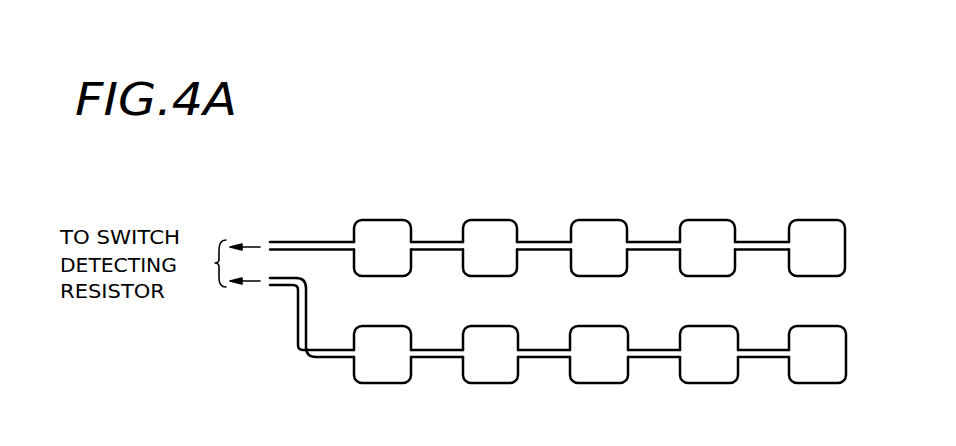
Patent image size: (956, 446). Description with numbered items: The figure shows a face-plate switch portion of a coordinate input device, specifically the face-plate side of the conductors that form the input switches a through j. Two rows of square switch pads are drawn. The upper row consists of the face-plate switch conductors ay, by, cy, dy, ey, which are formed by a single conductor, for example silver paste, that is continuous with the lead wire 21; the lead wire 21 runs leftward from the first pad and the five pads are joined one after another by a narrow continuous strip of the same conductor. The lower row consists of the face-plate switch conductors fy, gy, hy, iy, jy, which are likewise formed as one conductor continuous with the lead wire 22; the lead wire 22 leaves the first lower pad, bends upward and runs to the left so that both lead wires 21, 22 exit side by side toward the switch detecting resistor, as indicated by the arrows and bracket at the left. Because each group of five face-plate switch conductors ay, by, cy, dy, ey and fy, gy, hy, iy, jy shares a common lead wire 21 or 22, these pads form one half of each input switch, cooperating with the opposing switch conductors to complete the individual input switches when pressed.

The lead wire 21 is at (292, 241).
The lead wire 22 is at (297, 325).
The face-plate switch conductor ay is at (380, 220).
The face-plate switch conductor by is at (490, 220).
The face-plate switch conductor cy is at (599, 220).
The face-plate switch conductor dy is at (708, 220).
The face-plate switch conductor ey is at (815, 220).
The face-plate switch conductor fy is at (381, 383).
The face-plate switch conductor gy is at (490, 383).
The face-plate switch conductor hy is at (601, 383).
The face-plate switch conductor iy is at (714, 383).
The face-plate switch conductor jy is at (818, 383).